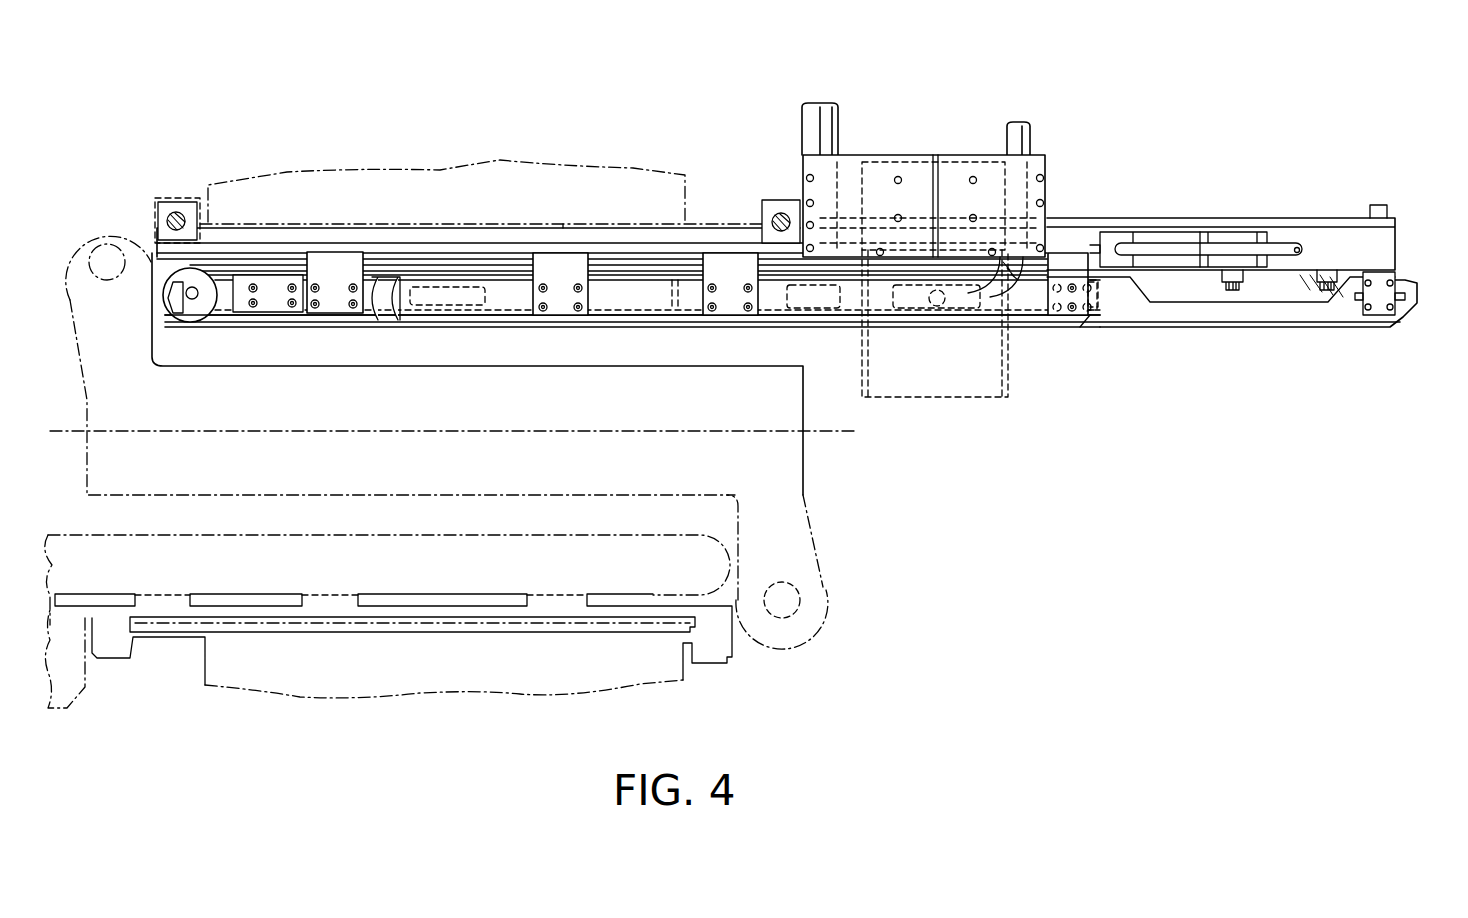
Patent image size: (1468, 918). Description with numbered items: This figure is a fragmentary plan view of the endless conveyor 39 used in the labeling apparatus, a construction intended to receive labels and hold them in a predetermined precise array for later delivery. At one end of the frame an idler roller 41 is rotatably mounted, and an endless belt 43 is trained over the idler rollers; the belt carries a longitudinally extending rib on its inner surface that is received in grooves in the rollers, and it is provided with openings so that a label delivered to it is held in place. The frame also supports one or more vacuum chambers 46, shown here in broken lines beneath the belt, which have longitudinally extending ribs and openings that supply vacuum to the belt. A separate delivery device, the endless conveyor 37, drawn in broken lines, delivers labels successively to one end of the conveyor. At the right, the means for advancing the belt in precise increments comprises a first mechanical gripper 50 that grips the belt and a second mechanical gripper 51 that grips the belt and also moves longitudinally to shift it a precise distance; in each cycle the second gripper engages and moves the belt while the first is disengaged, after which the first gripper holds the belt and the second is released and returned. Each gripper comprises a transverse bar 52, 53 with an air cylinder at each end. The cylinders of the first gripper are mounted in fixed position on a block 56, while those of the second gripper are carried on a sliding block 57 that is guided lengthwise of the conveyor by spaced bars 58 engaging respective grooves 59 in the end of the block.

The endless conveyor 37 is at (1008, 373).
The endless conveyor 39 is at (719, 216).
The idler roller 41 is at (177, 303).
The endless belt 43 is at (470, 322).
The vacuum chamber 46 is at (632, 295).
The first mechanical gripper 50 is at (1323, 258).
The second mechanical gripper 51 is at (1206, 221).
The transverse bar 52 is at (1313, 292).
The transverse bar 53 is at (1218, 290).
The block 56 is at (1373, 248).
The sliding block 57 is at (1223, 237).
The spaced bar 58 is at (1155, 250).
The groove 59 is at (1242, 247).